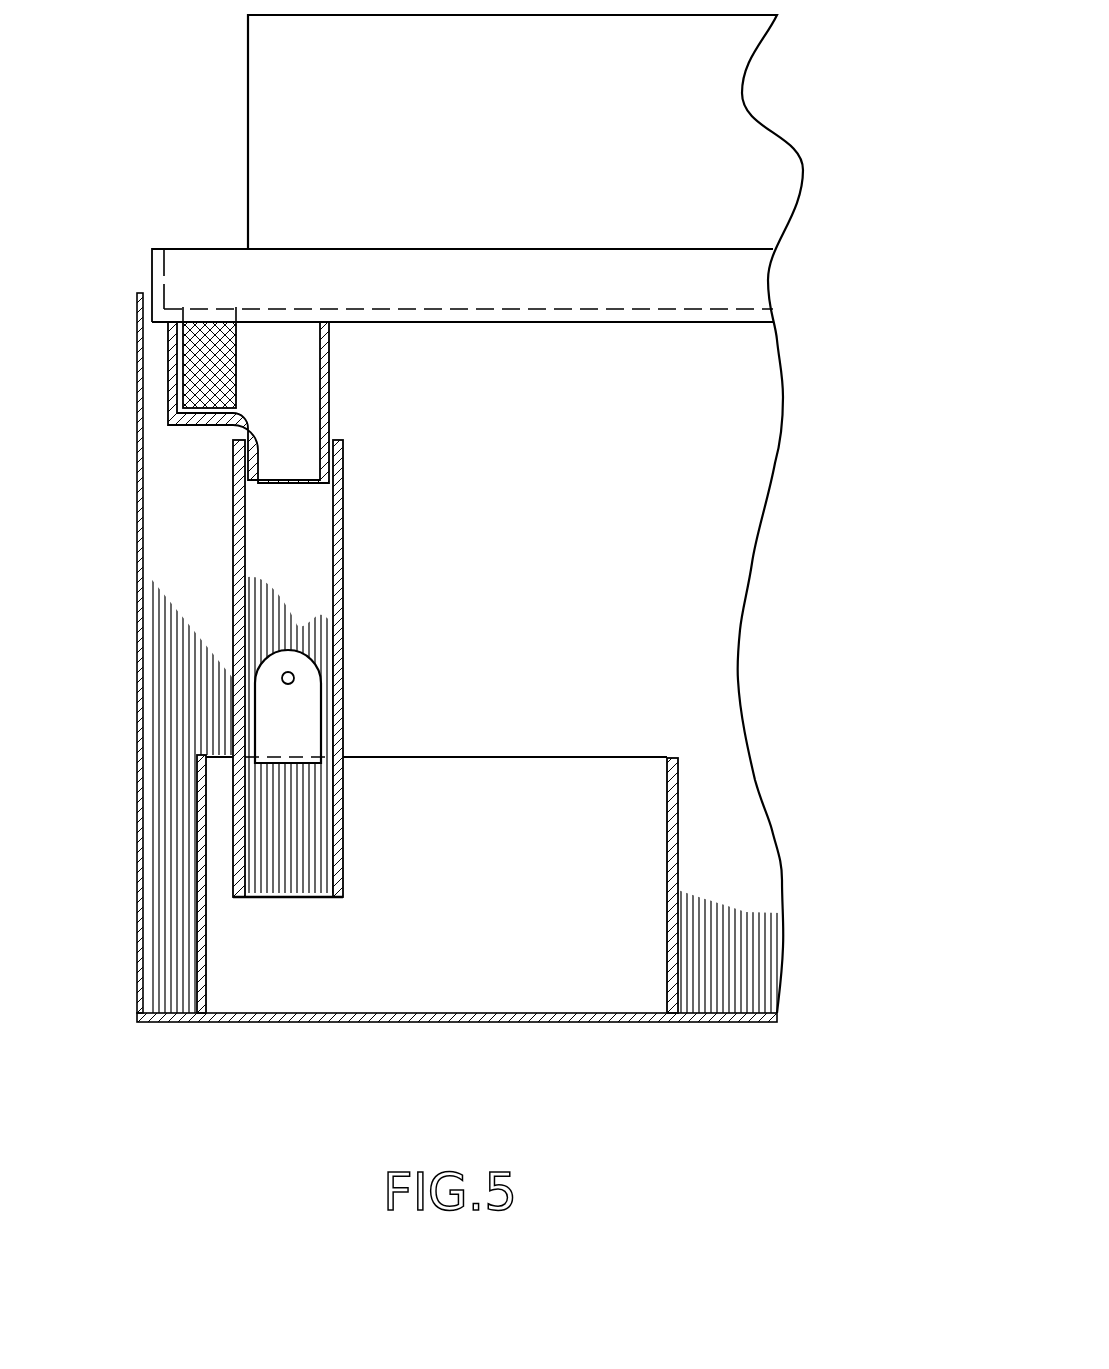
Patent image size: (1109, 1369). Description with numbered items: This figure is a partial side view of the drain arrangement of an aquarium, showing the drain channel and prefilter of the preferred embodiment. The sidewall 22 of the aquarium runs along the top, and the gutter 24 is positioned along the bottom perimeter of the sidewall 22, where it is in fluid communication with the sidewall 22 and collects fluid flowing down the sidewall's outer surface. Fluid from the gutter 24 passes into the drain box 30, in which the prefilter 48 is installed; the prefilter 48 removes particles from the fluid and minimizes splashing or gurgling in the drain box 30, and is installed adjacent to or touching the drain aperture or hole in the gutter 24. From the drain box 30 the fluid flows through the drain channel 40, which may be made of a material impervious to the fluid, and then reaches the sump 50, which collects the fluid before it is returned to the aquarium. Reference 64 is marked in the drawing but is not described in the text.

The sidewall 22 is at (248, 123).
The gutter 24 is at (211, 272).
The seal region 64 is at (203, 307).
The prefilter 48 is at (237, 345).
The drain box 30 is at (328, 398).
The drain channel 40 is at (343, 623).
The sump 50 is at (553, 758).